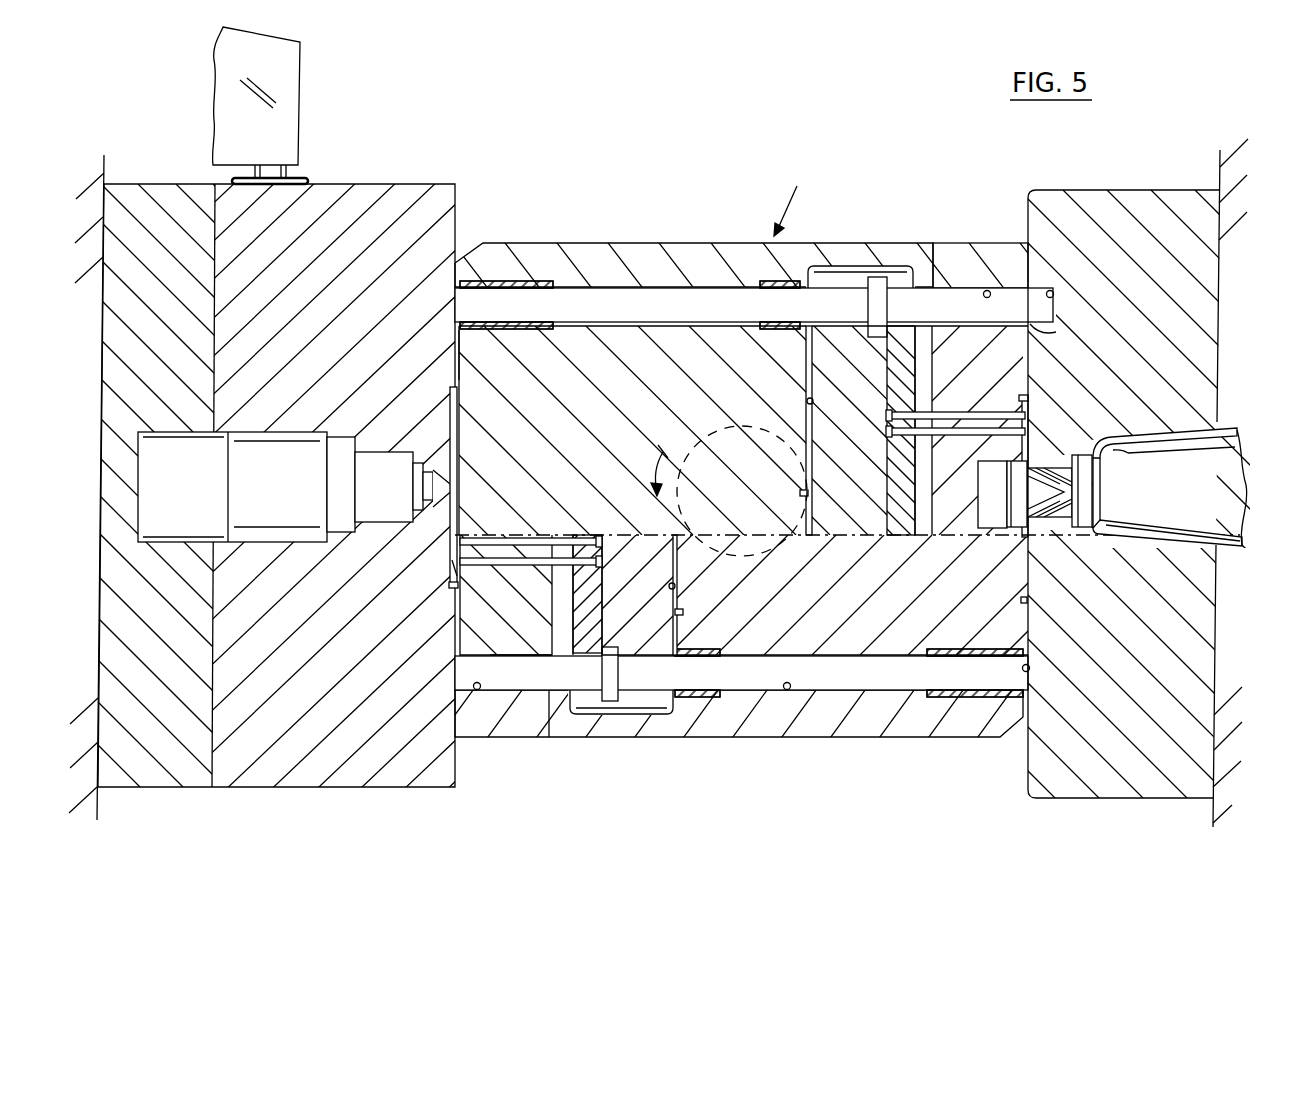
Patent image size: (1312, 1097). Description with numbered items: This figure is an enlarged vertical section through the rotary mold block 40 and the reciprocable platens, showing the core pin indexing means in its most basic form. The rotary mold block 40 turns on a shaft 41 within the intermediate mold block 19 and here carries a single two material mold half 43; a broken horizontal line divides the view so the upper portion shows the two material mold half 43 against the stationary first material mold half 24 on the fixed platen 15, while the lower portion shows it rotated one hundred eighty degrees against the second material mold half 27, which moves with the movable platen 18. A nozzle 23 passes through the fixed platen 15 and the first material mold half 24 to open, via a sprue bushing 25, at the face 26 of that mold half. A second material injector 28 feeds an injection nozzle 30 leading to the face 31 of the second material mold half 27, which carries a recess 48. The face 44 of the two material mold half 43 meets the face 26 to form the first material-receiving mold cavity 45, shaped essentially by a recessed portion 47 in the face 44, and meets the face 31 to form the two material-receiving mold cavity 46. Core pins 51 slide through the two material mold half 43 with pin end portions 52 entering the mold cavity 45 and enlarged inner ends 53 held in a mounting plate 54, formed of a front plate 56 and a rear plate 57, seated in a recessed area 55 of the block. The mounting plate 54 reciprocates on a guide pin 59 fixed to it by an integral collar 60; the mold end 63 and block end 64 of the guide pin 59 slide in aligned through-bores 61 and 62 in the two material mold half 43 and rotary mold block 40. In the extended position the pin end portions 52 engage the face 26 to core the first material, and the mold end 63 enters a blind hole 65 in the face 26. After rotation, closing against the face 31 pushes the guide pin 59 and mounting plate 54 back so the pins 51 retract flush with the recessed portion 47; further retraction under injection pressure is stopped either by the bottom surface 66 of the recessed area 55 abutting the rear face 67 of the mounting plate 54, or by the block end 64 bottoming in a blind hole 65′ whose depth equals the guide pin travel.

The fixed platen 15 is at (1233, 166).
The movable platen 18 is at (96, 190).
The intermediate mold block 19 is at (795, 198).
The nozzle 23 is at (1240, 452).
The first material mold half 24 is at (1130, 190).
The sprue bushing 25 is at (1052, 527).
The face 26 is at (1030, 600).
The second material mold half 27 is at (370, 188).
The second material injector 28 is at (298, 108).
The injection nozzle 30 is at (255, 440).
The face 31 is at (462, 350).
The rotary mold block 40 is at (718, 244).
The shaft 41 is at (676, 435).
The two material mold half 43 is at (962, 246).
The face 44 is at (1035, 357).
The first material-receiving mold cavity 45 is at (1030, 452).
The two material-receiving mold cavity 46 is at (450, 546).
The recessed portion 47 is at (1030, 400).
The recess 48 is at (452, 568).
The core pins 51 is at (967, 430).
The pin end portions 52 is at (1033, 408).
The inner ends 53 is at (886, 424).
The mounting plate 54 is at (848, 276).
The recessed area 55 is at (822, 268).
The front plate 56 is at (905, 362).
The rear plate 57 is at (824, 380).
The guide pin 59 is at (660, 288).
The integral collar 60 is at (878, 282).
The through-bore 61 is at (987, 292).
The through-bore 62 is at (593, 288).
The mold end 63 is at (1055, 333).
The block end 64 is at (538, 281).
The blind hole 65 is at (1052, 293).
The blind hole 65′ is at (1032, 670).
The bottom surface 66 is at (806, 400).
The rear face 67 is at (812, 492).